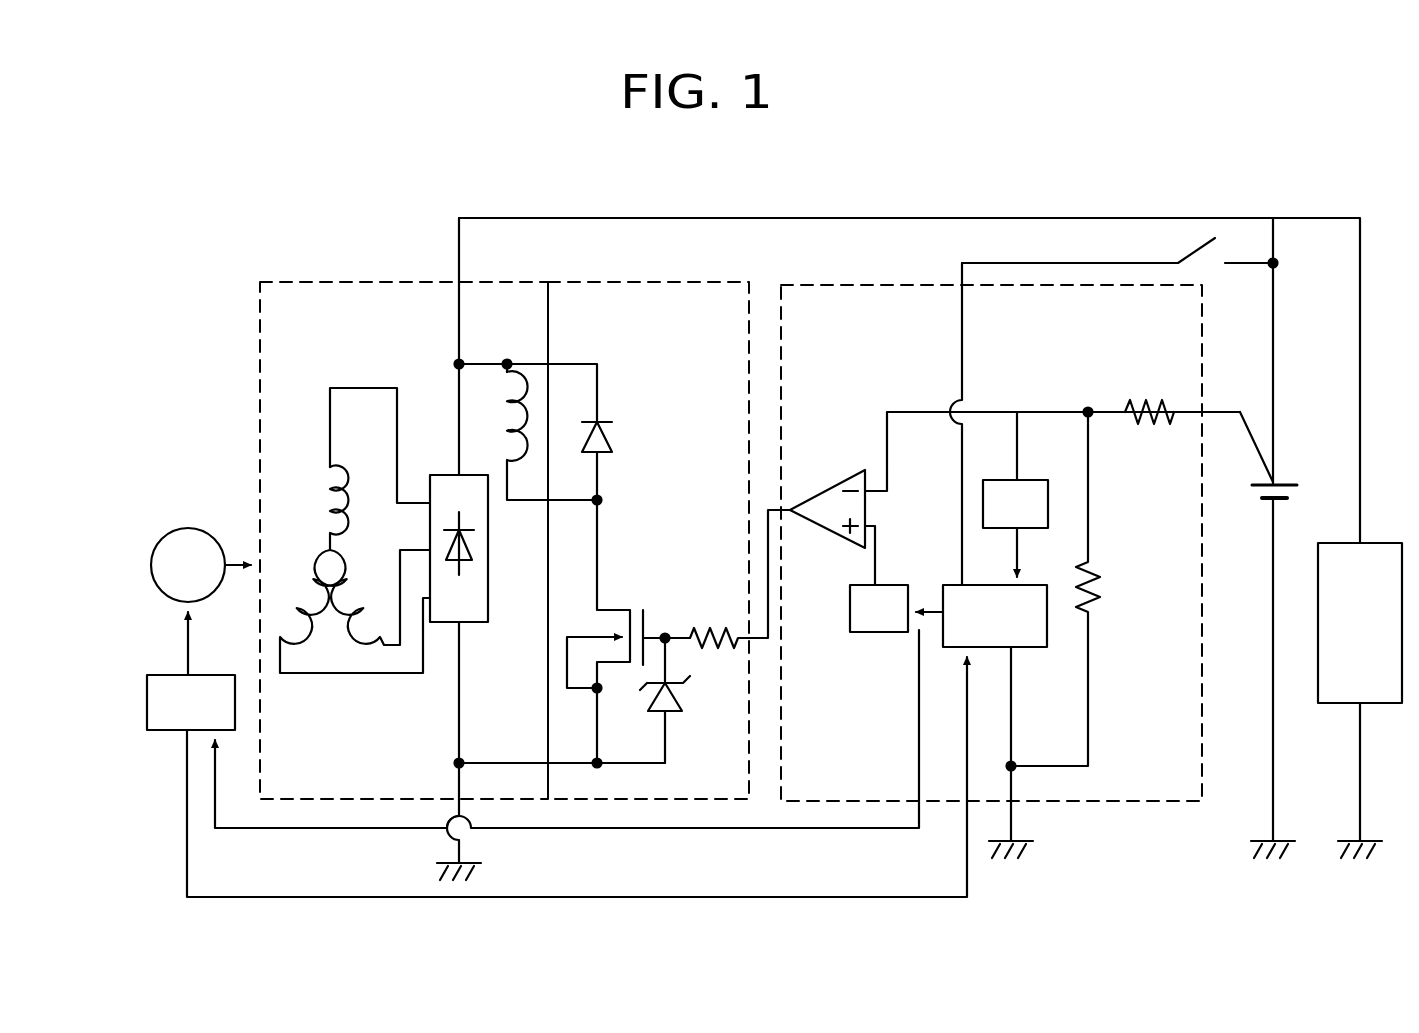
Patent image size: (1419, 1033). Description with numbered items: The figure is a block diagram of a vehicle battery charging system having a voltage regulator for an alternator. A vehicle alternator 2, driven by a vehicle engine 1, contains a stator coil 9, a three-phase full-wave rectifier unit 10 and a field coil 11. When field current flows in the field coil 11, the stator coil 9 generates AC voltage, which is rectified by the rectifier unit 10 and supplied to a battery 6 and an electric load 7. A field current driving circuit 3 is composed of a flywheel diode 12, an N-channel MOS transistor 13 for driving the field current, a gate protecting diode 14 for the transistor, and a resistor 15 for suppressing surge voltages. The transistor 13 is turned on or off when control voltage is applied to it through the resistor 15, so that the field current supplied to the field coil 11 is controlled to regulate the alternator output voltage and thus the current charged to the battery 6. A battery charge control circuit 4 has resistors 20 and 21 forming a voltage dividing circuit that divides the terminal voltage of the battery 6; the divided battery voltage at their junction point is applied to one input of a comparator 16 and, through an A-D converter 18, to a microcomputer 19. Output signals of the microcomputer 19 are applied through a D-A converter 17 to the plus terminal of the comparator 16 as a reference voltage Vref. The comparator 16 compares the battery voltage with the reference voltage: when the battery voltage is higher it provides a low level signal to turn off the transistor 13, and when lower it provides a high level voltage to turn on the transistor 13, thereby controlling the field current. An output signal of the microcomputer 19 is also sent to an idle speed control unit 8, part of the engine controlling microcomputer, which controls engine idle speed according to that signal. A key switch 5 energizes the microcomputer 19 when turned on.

The vehicle engine 1 is at (190, 523).
The vehicle alternator 2 is at (259, 329).
The field current driving circuit 3 is at (657, 282).
The battery charge control circuit 4 is at (868, 285).
The key switch 5 is at (1201, 253).
The battery 6 is at (1285, 482).
The electric load 7 is at (1370, 542).
The idle speed control unit 8 is at (162, 733).
The stator coil 9 is at (333, 670).
The three-phase full-wave rectifier unit 10 is at (473, 616).
The field coil 11 is at (493, 424).
The flywheel diode 12 is at (614, 440).
The N-channel MOS transistor 13 is at (615, 608).
The gate protecting diode 14 is at (675, 713).
The resistor 15 is at (712, 630).
The comparator 16 is at (833, 488).
The D-A converter 17 is at (876, 634).
The A-D converter 18 is at (1050, 504).
The microcomputer 19 is at (1027, 640).
The resistor 20 is at (1135, 398).
The resistor 21 is at (1096, 585).